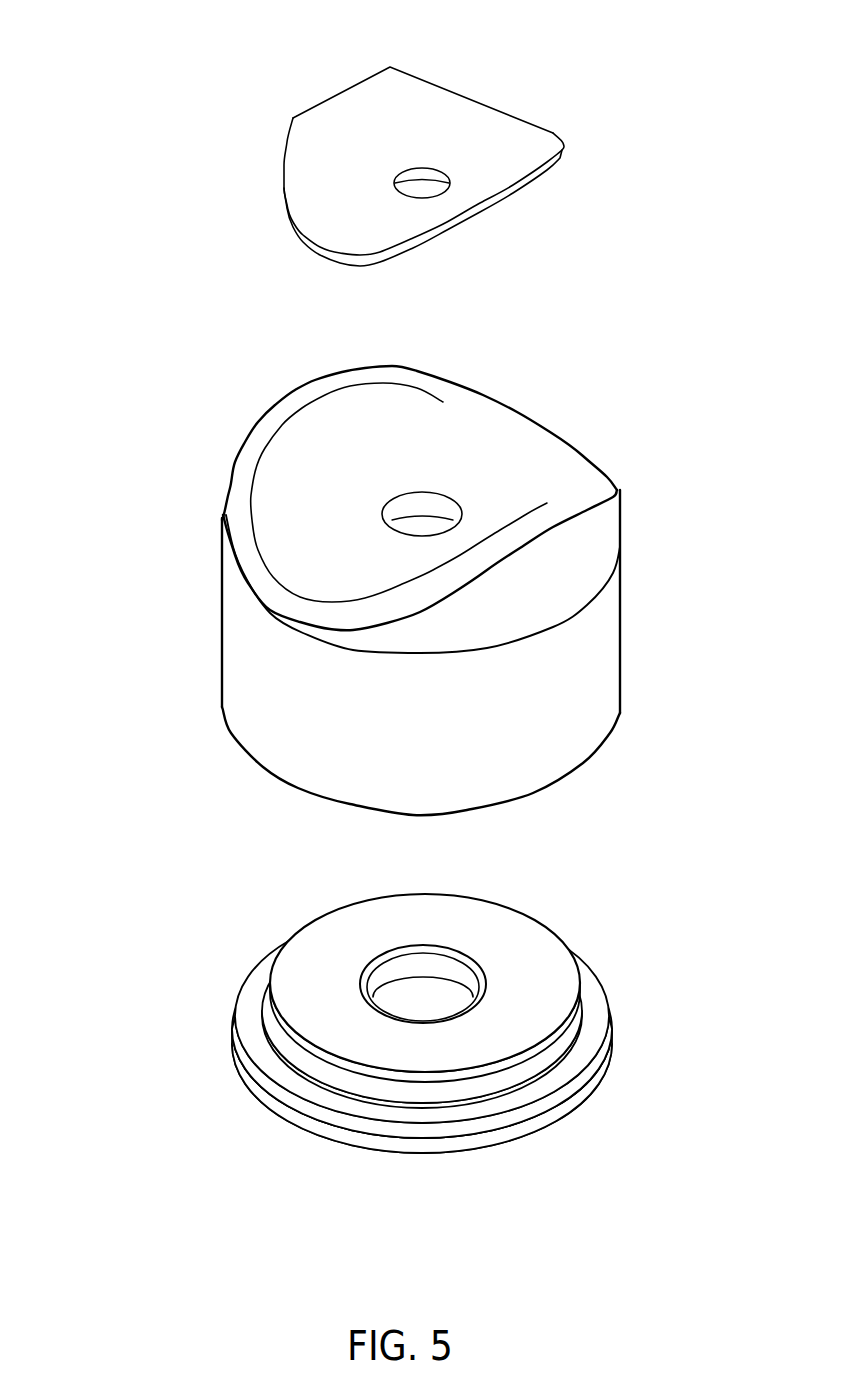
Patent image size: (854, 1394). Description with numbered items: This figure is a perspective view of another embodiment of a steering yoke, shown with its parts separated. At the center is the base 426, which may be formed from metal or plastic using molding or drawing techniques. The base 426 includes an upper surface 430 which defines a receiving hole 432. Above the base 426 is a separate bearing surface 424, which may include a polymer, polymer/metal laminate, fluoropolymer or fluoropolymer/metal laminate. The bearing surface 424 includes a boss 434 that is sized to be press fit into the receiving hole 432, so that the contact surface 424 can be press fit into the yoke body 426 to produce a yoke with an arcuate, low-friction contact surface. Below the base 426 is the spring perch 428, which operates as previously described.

The bearing surface 424 is at (513, 157).
The boss 434 is at (422, 183).
The base 426 is at (563, 743).
The upper surface 430 is at (363, 553).
The receiving hole 432 is at (420, 517).
The spring perch 428 is at (543, 1013).